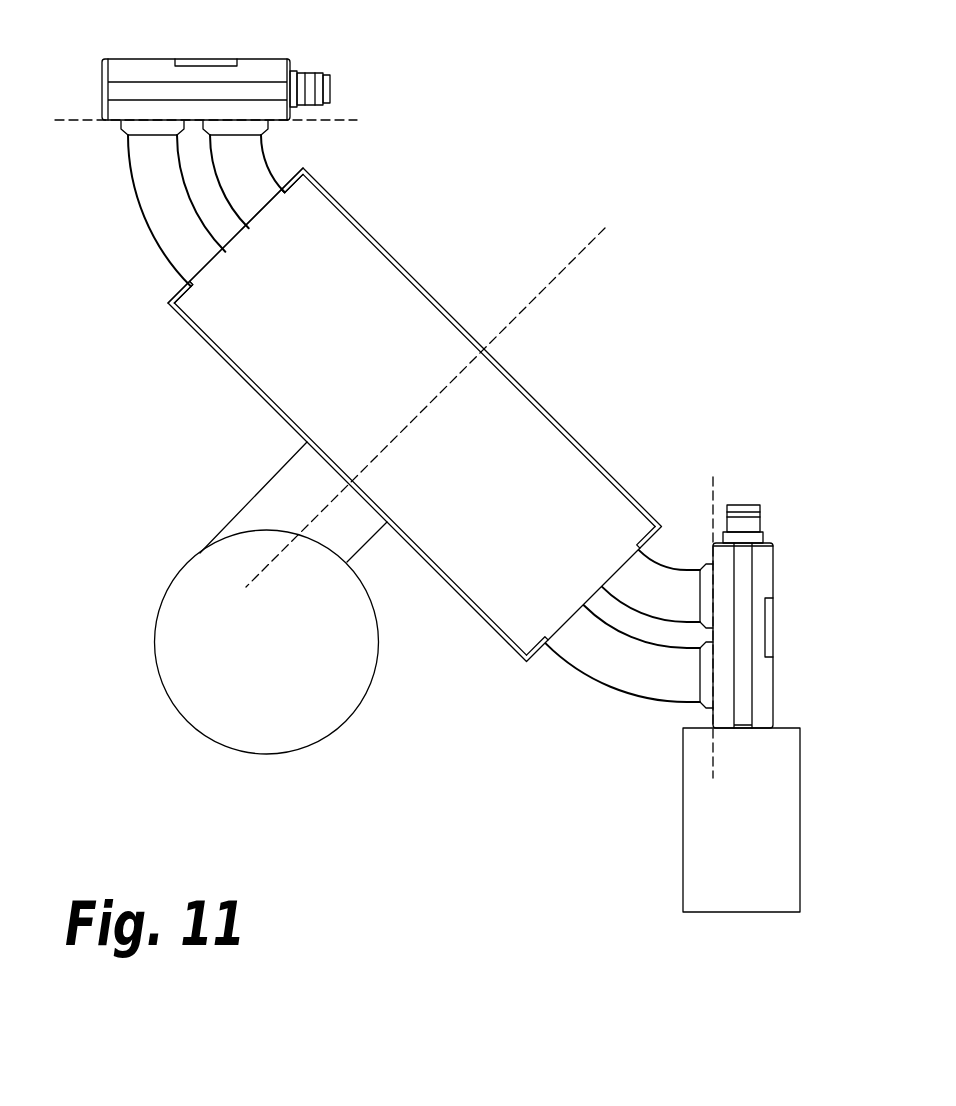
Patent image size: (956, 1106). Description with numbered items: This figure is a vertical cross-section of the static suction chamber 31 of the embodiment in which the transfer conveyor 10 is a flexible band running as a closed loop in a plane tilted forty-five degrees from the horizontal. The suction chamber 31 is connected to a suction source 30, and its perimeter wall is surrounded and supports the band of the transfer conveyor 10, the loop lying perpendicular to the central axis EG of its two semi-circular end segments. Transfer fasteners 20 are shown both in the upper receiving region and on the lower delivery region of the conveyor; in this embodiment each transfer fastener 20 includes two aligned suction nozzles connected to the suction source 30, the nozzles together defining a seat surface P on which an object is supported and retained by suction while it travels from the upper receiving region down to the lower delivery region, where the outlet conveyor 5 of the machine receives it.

The outlet conveyor 5 is at (789, 727).
The transfer conveyor 10 is at (187, 288).
The transfer fastener 20 is at (140, 205).
The suction source 30 is at (155, 647).
The suction chamber 31 is at (415, 415).
The seat surface P is at (151, 120).
The central axis EG is at (582, 246).